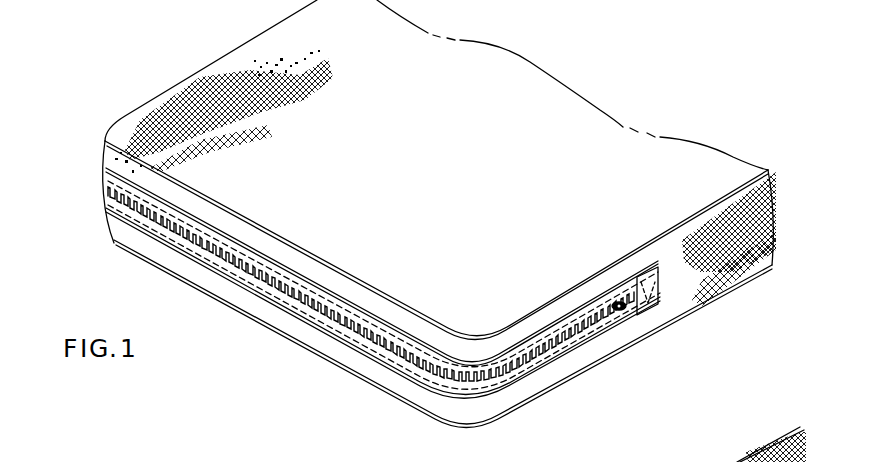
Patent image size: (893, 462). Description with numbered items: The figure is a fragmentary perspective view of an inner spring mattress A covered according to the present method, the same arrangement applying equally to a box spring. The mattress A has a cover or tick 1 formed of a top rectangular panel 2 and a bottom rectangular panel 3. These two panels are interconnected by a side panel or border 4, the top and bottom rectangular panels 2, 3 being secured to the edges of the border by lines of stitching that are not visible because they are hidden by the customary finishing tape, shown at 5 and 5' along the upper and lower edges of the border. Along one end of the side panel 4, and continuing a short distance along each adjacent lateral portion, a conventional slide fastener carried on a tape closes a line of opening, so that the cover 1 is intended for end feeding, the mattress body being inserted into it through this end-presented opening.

The mattress A is at (188, 65).
The cover or tick 1 is at (478, 103).
The top rectangular panel 2 is at (600, 110).
The bottom rectangular panel 3 is at (740, 288).
The side panel or border 4 is at (757, 252).
The finishing tape 5 is at (477, 298).
The zipper tape / lower band 5' is at (383, 305).